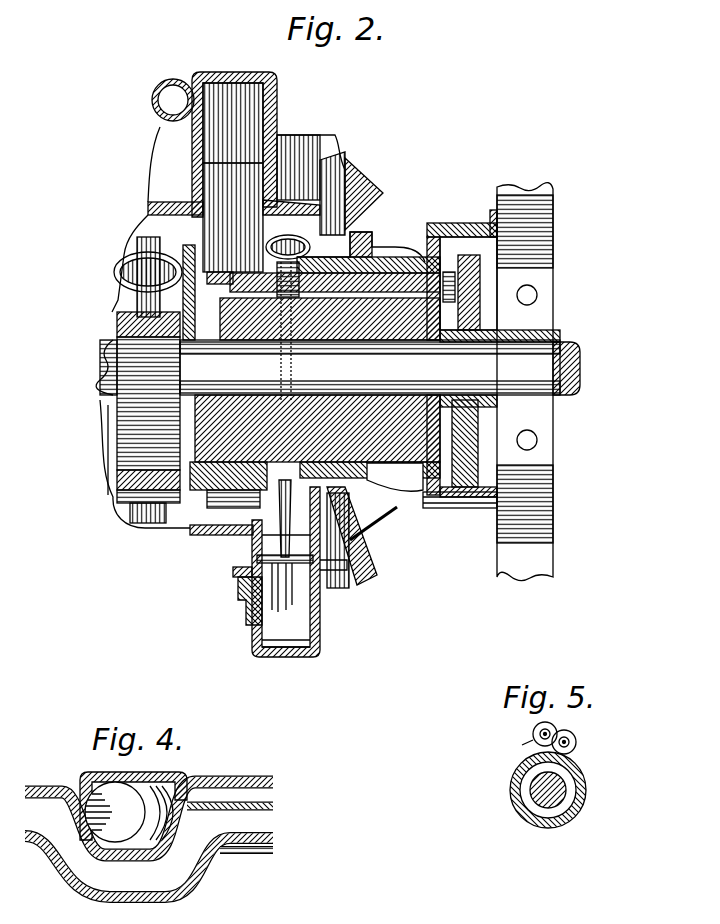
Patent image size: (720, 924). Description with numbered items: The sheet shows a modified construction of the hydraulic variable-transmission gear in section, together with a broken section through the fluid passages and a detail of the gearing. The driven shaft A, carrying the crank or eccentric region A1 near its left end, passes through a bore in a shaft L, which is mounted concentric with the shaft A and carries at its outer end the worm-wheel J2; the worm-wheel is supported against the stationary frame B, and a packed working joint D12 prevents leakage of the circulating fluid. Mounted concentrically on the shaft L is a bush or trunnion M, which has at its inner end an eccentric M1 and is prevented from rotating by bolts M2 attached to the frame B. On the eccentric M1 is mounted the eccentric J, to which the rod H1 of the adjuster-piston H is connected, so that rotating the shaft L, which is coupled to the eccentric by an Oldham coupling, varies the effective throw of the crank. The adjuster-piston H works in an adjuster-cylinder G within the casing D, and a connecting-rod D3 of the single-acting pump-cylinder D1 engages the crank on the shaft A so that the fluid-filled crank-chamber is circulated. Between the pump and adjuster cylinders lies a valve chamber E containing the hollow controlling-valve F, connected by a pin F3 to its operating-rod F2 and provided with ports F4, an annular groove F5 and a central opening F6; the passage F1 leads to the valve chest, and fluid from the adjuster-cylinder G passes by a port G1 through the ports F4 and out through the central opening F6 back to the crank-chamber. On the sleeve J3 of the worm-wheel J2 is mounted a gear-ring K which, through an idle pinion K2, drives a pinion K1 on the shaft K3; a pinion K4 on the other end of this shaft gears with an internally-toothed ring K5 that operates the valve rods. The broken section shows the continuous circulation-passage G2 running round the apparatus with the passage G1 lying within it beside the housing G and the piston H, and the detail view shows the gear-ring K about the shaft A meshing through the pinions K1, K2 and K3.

In FIG. 2, the driven shaft A is at (98, 325).
In FIG. 5, the driven shaft A is at (535, 789).
In FIG. 2, the gear on shaft A1 is at (148, 407).
In FIG. 2, the stationary frame B is at (523, 210).
In FIG. 2, the casing D is at (300, 160).
In FIG. 2, the pump-cylinder D1 is at (136, 262).
In FIG. 2, the connecting-rod D3 is at (128, 285).
In FIG. 2, the working joint D12 is at (500, 323).
In FIG. 2, the valve chamber E is at (262, 652).
In FIG. 2, the controlling-valve F is at (311, 632).
In FIG. 2, the valve passage F1 is at (330, 235).
In FIG. 2, the operating-rod F2 is at (348, 566).
In FIG. 2, the pin F3 is at (262, 575).
In FIG. 2, the ports F4 is at (263, 580).
In FIG. 2, the annular groove F5 is at (302, 613).
In FIG. 2, the central opening F6 is at (320, 575).
In FIG. 2, the adjuster-cylinder G is at (233, 117).
In FIG. 4, the adjuster-cylinder G is at (90, 786).
In FIG. 2, the port G1 is at (275, 648).
In FIG. 4, the port G1 is at (187, 798).
In FIG. 2, the circulation-passage G2 is at (173, 100).
In FIG. 4, the circulation-passage G2 is at (103, 877).
In FIG. 2, the adjuster-piston H is at (225, 210).
In FIG. 4, the adjuster-piston H is at (125, 823).
In FIG. 2, the rod H1 is at (192, 282).
In FIG. 2, the eccentric J is at (228, 481).
In FIG. 2, the worm-wheel J2 is at (470, 490).
In FIG. 2, the sleeve J3 is at (450, 480).
In FIG. 2, the gear-ring K is at (497, 490).
In FIG. 5, the gear-ring K is at (590, 784).
In FIG. 2, the pinion K1 is at (458, 262).
In FIG. 5, the pinion K1 is at (552, 730).
In FIG. 5, the idle pinion K2 is at (576, 742).
In FIG. 2, the shaft K3 is at (372, 268).
In FIG. 5, the shaft K3 is at (533, 736).
In FIG. 2, the pinion K4 is at (330, 286).
In FIG. 2, the internally-toothed ring K5 is at (345, 208).
In FIG. 2, the shaft L is at (317, 436).
In FIG. 2, the trunnion M is at (375, 467).
In FIG. 2, the eccentric M1 is at (182, 505).
In FIG. 2, the bolts M2 is at (395, 510).